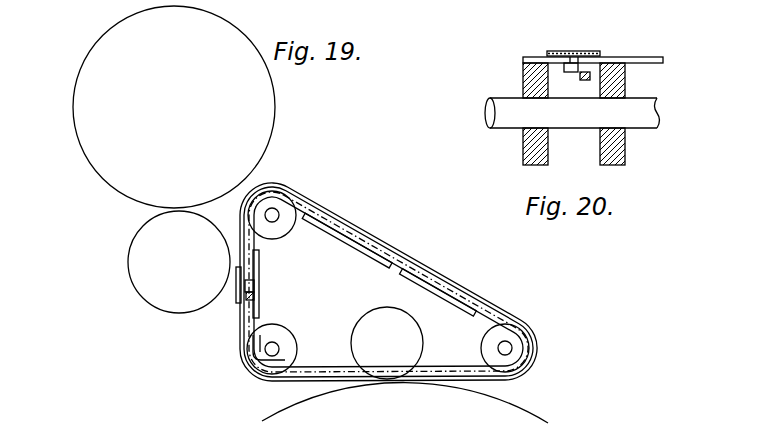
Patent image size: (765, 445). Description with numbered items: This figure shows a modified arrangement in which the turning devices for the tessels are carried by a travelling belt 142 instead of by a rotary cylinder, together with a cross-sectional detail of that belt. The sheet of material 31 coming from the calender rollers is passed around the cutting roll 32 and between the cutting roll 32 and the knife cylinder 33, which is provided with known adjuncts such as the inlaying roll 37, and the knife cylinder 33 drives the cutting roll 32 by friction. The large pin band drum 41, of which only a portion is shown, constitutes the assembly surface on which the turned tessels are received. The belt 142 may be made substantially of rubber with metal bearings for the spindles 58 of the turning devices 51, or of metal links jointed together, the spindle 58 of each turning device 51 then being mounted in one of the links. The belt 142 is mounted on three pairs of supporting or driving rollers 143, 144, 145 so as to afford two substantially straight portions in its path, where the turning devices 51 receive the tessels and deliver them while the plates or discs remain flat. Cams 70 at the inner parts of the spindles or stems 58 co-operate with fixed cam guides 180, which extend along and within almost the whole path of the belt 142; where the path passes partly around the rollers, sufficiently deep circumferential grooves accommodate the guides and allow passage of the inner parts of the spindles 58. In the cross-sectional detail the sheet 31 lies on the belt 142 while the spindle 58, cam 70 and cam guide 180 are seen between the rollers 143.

In FIG. 20, the sheet of material 31 is at (555, 52).
In FIG. 19, the cutting roll 32 is at (252, 119).
In FIG. 19, the knife cylinder 33 is at (145, 246).
In FIG. 19, the inlaying roll 37 is at (405, 327).
In FIG. 19, the pin band drum 41 is at (500, 399).
In FIG. 19, the turning device 51 is at (236, 303).
In FIG. 20, the turning device 51 is at (598, 53).
In FIG. 19, the spindle 58 is at (247, 283).
In FIG. 20, the spindle 58 is at (568, 63).
In FIG. 19, the cam 70 is at (257, 295).
In FIG. 20, the cam 70 is at (548, 100).
In FIG. 19, the belt 142 is at (385, 245).
In FIG. 20, the belt 142 is at (530, 57).
In FIG. 19, the supporting roller 143 is at (283, 228).
In FIG. 20, the supporting roller 143 is at (605, 155).
In FIG. 19, the supporting roller 144 is at (280, 330).
In FIG. 19, the supporting roller 145 is at (495, 342).
In FIG. 19, the fixed cam guide 180 is at (255, 305).
In FIG. 20, the fixed cam guide 180 is at (585, 75).